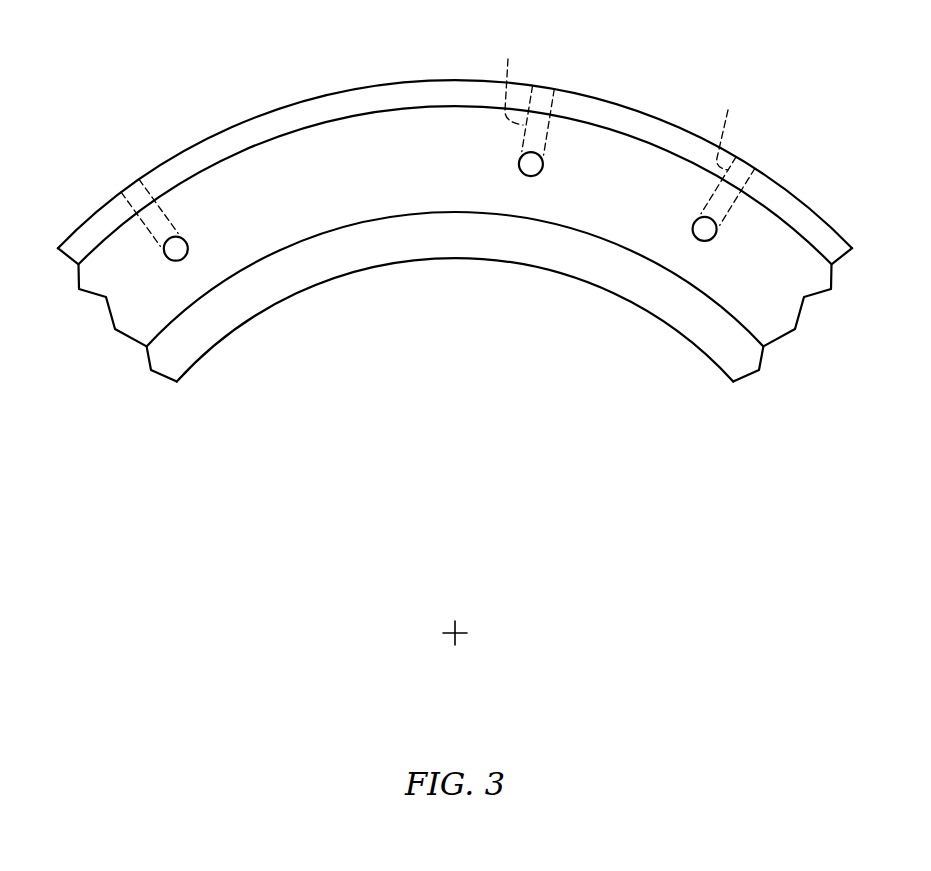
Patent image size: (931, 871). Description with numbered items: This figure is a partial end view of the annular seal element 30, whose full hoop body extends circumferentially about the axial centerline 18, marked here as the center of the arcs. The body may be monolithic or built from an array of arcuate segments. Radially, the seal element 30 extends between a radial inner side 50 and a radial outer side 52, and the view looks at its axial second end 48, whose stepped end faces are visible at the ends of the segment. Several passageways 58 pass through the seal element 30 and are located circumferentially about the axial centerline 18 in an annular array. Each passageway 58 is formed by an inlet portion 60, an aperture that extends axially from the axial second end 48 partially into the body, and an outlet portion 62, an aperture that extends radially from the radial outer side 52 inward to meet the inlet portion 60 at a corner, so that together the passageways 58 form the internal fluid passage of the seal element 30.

The axial centerline 18 is at (457, 637).
The seal element 30 is at (108, 122).
The axial second end 48 is at (120, 308).
The radial inner side 50 is at (447, 260).
The radial outer side 52 is at (442, 80).
The passageway 58 is at (138, 232).
The inlet portion 60 is at (527, 177).
The outlet portion 62 is at (618, 99).